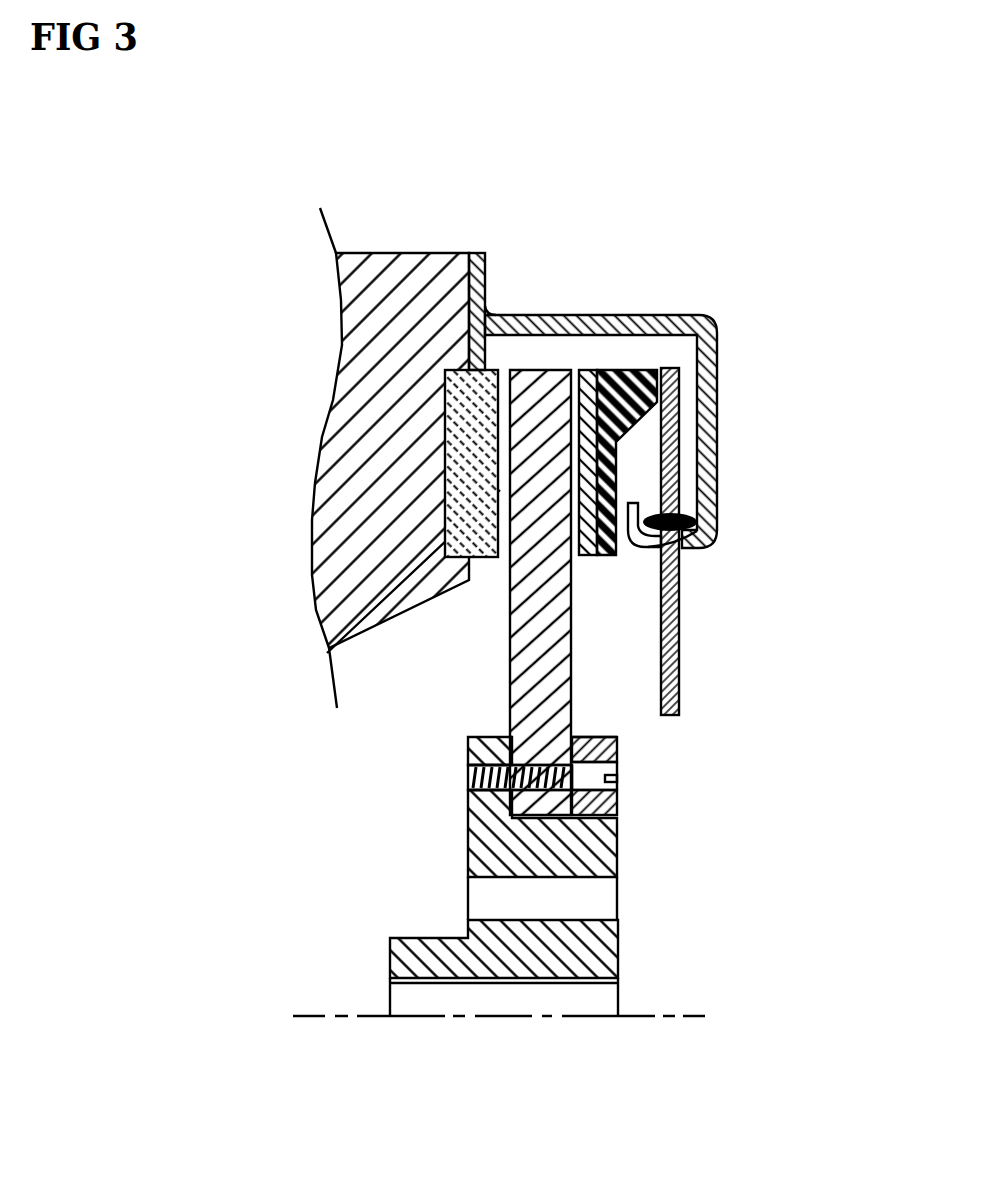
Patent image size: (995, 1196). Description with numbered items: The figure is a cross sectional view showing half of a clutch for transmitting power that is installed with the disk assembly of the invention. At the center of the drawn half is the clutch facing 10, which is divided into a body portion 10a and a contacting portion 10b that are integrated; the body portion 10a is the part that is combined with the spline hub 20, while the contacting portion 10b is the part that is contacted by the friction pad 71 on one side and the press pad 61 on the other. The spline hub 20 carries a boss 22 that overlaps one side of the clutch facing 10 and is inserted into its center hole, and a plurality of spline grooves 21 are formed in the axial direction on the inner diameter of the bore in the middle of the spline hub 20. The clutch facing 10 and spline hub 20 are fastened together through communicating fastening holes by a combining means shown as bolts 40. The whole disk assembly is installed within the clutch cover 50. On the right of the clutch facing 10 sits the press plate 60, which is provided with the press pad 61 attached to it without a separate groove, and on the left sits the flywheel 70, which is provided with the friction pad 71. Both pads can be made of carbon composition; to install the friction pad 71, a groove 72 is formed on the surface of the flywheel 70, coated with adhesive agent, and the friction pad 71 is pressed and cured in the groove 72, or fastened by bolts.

The clutch facing 10 is at (320, 592).
The body portion 10a is at (530, 648).
The contacting portion 10b is at (569, 500).
The spline hub 20 is at (622, 876).
The spline grooves 21 is at (598, 978).
The boss 22 is at (603, 862).
The bolts 40 is at (470, 782).
The clutch cover 50 is at (589, 313).
The press plate 60 is at (679, 437).
The press pad 61 is at (608, 372).
The flywheel 70 is at (370, 322).
The friction pad 71 is at (484, 370).
The groove 72 is at (447, 475).